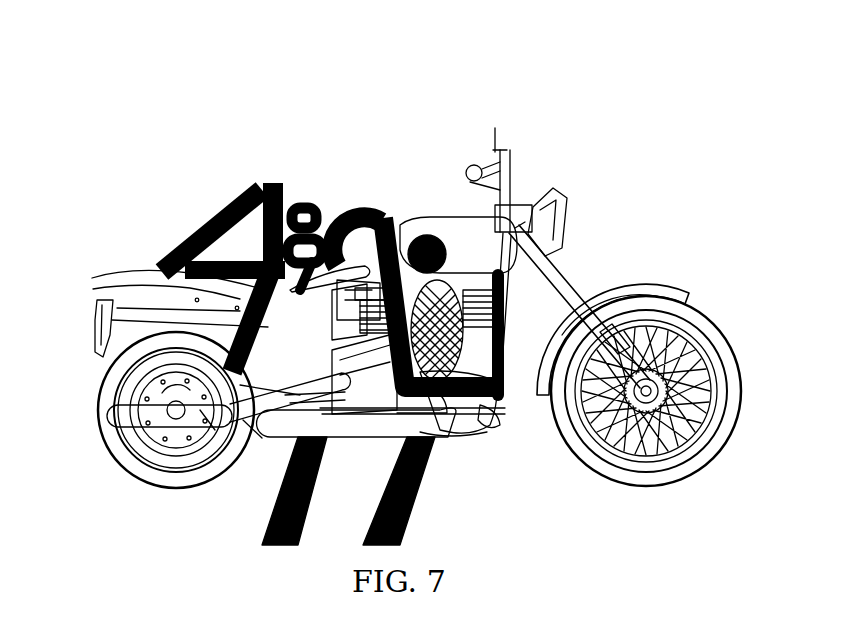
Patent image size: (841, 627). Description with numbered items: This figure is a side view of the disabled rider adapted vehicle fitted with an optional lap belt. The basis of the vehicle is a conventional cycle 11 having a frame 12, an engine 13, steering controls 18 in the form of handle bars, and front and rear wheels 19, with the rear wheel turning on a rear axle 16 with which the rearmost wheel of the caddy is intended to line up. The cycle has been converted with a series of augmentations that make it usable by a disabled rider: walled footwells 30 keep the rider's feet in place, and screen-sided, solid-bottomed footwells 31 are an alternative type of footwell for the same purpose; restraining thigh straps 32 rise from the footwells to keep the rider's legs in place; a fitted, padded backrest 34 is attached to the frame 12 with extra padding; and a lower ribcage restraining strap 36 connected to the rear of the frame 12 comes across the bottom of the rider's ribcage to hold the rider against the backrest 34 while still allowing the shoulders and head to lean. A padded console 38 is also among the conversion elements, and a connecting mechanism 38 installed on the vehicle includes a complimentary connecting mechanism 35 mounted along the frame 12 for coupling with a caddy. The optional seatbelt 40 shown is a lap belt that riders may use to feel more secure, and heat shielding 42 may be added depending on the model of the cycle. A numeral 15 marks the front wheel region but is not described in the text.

The cycle 11 is at (690, 152).
The frame 12 is at (243, 420).
The engine 13 is at (507, 312).
The front wheel 15 is at (685, 325).
The rear axle 16 is at (148, 395).
The steering controls 18 is at (485, 180).
The front and rear wheels 19 is at (133, 456).
The walled footwells 30 is at (460, 433).
The screen-sided, solid-bottomed footwells 31 is at (487, 420).
The restraining thigh straps 32 is at (367, 210).
The fitted, padded backrest 34 is at (274, 183).
The complimentary connecting mechanism 35 is at (398, 439).
The lower ribcage restraining strap 36 is at (307, 200).
The padded console 38 is at (265, 514).
The seatbelt 40 is at (200, 322).
The heat shielding 42 is at (530, 181).